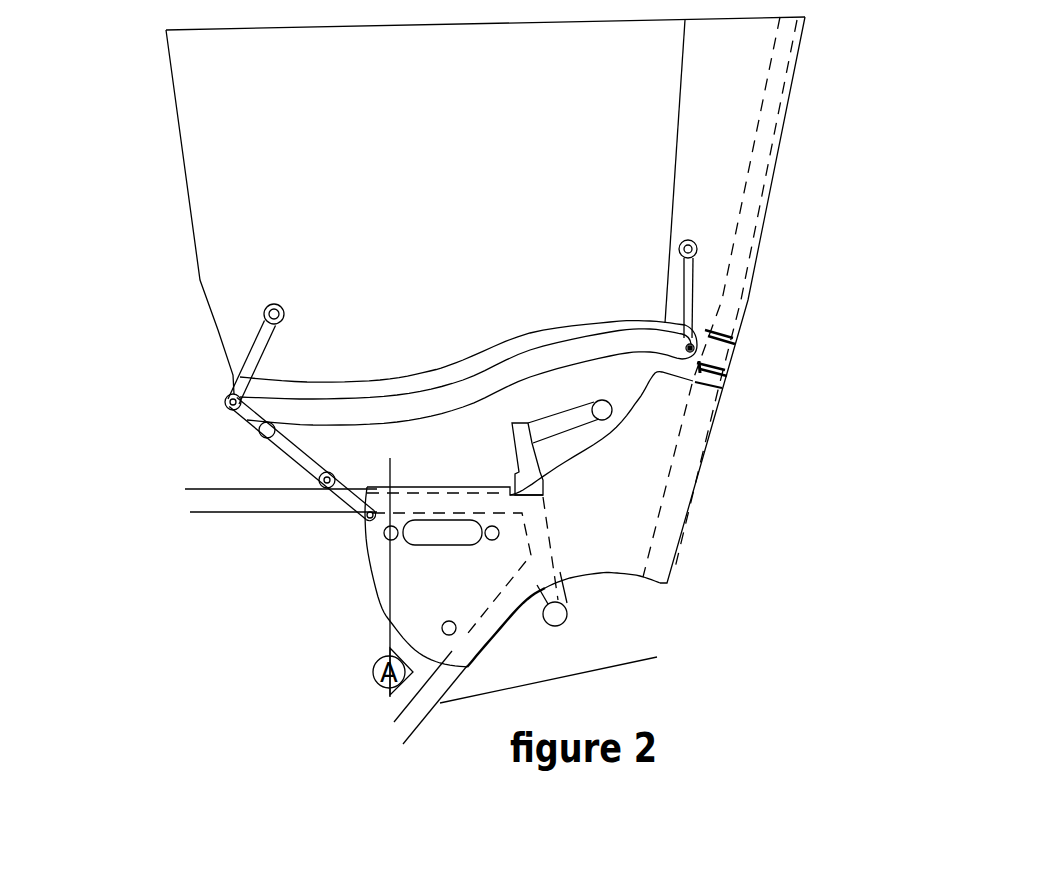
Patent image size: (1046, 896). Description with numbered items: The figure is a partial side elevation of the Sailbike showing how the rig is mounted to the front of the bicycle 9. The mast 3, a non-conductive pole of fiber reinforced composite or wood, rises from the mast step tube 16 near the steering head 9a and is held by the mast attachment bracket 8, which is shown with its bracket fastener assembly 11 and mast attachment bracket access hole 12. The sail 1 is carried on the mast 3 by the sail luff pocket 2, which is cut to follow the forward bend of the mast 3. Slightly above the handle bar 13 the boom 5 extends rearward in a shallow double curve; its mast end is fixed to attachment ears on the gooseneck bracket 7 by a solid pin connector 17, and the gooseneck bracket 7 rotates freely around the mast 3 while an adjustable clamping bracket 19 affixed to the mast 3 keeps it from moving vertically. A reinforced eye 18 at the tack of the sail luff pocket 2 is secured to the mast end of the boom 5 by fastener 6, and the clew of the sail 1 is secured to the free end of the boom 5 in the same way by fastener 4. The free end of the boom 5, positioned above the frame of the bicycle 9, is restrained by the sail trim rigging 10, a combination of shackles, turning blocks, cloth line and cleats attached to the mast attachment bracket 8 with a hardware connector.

The sail 1 is at (250, 288).
The sail luff pocket 2 is at (733, 27).
The mast 3 is at (788, 108).
The fastener 4 is at (247, 355).
The boom 5 is at (307, 413).
The fastener 6 is at (693, 293).
The gooseneck bracket 7 is at (730, 378).
The mast attachment bracket 8 is at (648, 418).
The bicycle 9 is at (198, 502).
The steering head 9a is at (520, 473).
The sail trim rigging 10 is at (320, 473).
The bracket fastener assembly 11 is at (385, 537).
The mast attachment bracket access hole 12 is at (410, 545).
The handle bar 13 is at (610, 417).
The mast step tube 16 is at (660, 585).
The pin connector 17 is at (228, 397).
The reinforced eye 18 is at (265, 310).
The clamping bracket 19 is at (735, 335).